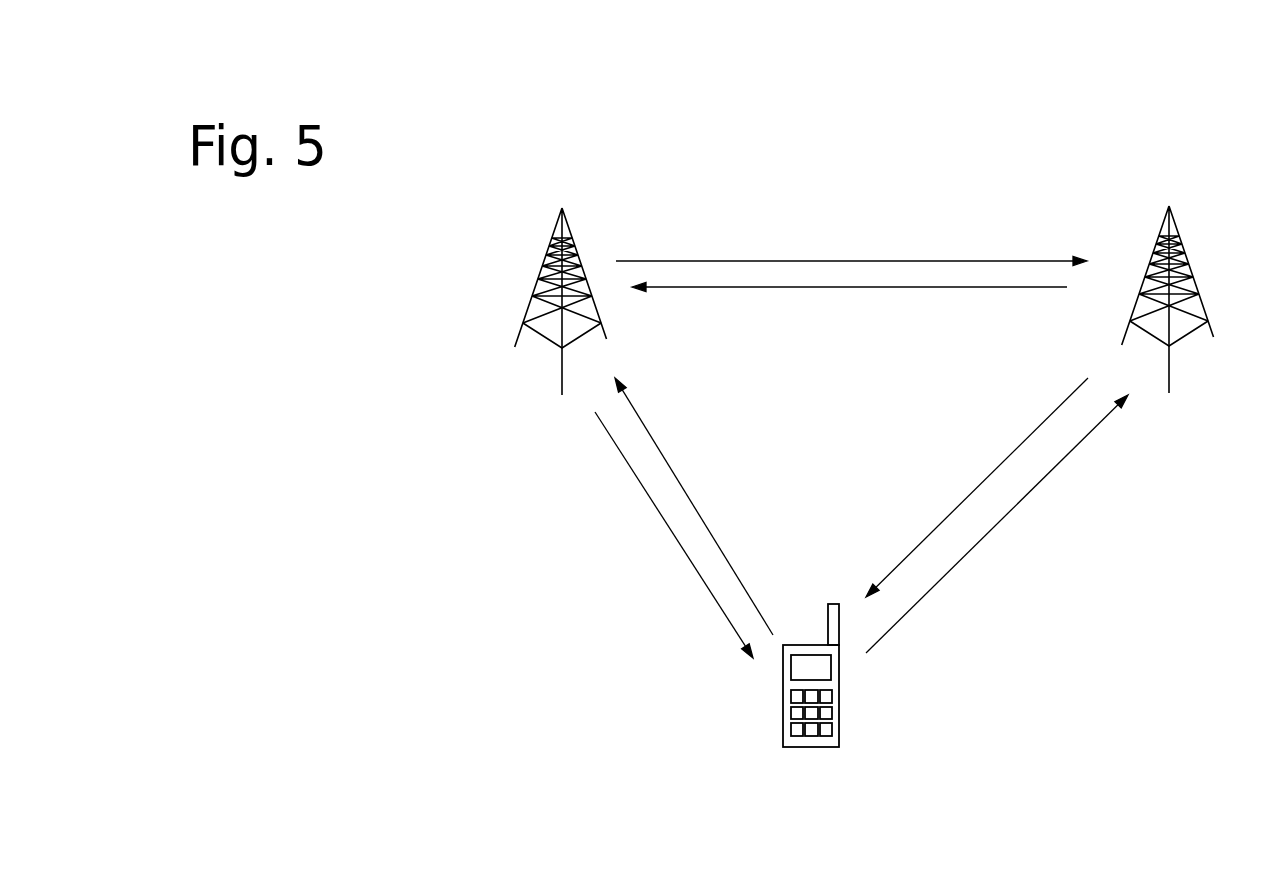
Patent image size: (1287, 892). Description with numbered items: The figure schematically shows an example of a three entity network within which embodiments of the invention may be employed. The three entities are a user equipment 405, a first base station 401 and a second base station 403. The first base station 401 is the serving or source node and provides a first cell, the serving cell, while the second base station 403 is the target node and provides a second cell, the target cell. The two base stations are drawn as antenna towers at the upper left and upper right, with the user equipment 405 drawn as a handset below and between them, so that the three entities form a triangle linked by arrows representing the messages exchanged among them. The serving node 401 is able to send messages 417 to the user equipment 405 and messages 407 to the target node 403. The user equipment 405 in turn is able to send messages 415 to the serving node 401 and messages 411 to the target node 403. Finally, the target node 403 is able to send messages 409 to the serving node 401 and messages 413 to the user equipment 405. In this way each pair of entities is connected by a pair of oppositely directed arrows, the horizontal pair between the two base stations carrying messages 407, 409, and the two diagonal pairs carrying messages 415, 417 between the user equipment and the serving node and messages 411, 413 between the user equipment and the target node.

The first base station 401 is at (527, 268).
The second base station 403 is at (1157, 214).
The user equipment 405 is at (778, 737).
The messages 407 is at (679, 260).
The messages 409 is at (715, 287).
The messages 411 is at (953, 565).
The messages 413 is at (1040, 423).
The messages 415 is at (727, 557).
The messages 417 is at (638, 479).